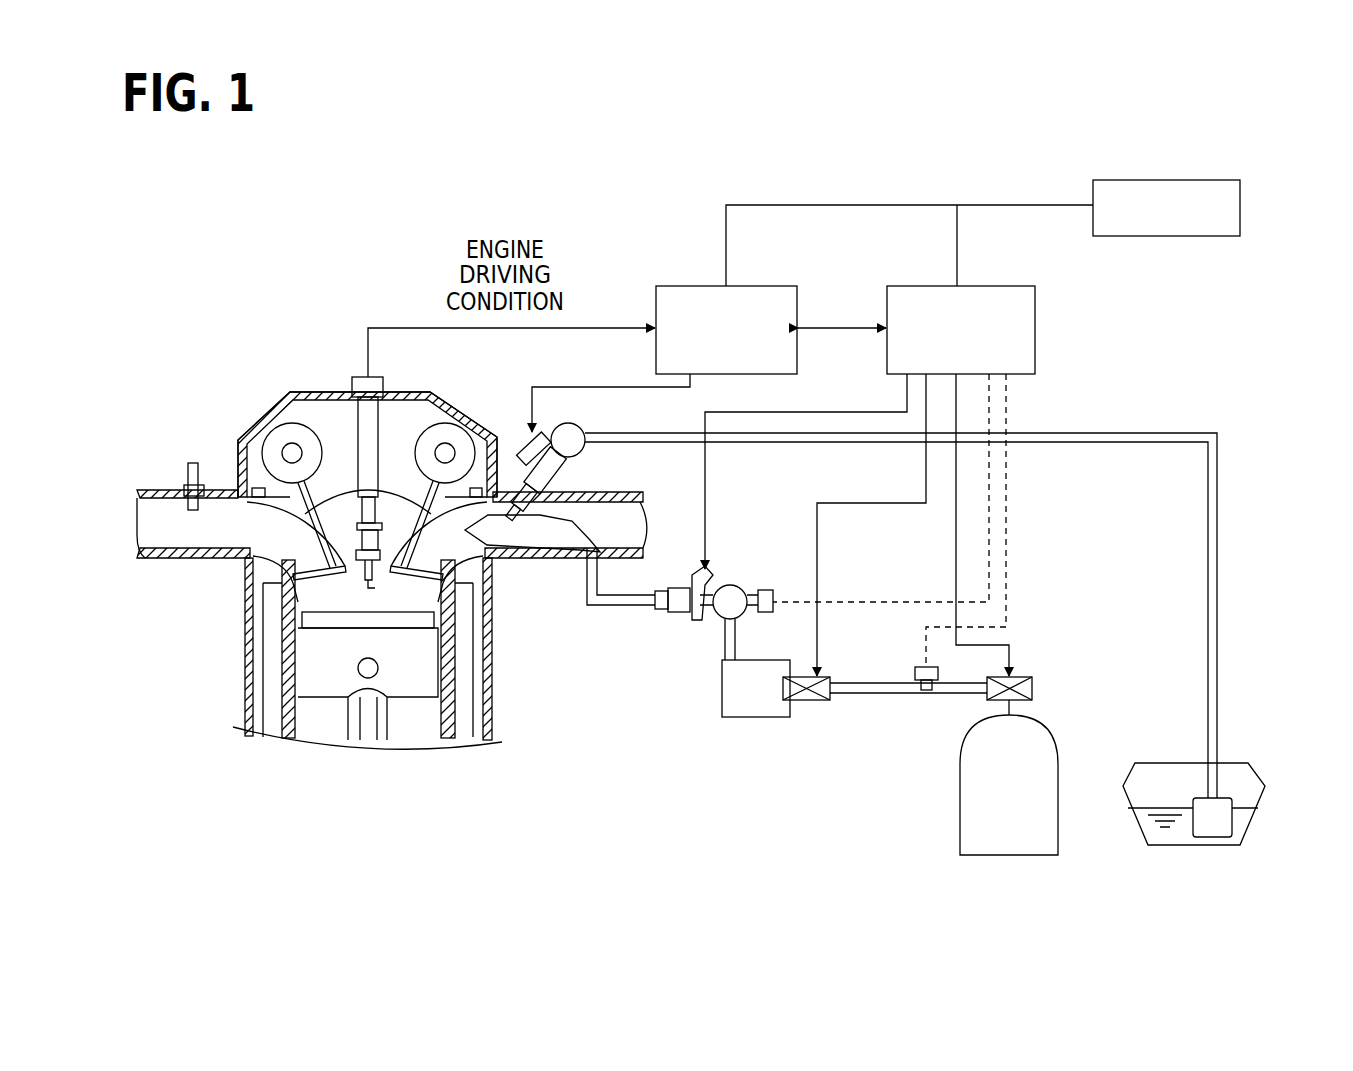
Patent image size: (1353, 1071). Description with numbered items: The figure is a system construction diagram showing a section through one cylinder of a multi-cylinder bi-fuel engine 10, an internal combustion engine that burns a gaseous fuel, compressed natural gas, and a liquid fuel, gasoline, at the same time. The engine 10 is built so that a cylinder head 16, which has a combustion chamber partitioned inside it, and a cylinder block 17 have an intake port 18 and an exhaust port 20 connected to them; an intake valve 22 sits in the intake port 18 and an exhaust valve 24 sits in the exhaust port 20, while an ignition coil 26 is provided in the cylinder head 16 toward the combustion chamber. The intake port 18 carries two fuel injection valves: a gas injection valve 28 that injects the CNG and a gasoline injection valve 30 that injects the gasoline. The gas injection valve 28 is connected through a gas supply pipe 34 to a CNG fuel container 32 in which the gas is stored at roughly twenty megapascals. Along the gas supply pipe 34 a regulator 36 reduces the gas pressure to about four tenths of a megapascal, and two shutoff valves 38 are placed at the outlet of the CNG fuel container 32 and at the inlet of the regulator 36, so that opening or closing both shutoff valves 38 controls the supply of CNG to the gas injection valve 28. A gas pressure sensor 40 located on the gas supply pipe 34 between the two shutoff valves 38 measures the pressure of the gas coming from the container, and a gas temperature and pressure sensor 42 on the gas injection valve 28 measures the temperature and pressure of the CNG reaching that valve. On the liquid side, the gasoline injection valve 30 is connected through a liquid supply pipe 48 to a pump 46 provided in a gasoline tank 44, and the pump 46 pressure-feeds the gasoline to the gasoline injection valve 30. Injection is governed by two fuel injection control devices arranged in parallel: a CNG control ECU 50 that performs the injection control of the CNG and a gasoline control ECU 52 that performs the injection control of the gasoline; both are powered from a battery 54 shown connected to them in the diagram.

The bi-fuel engine 10 is at (326, 389).
The cylinder head 16 is at (276, 408).
The cylinder block 17 is at (495, 690).
The intake port 18 is at (546, 560).
The exhaust port 20 is at (155, 560).
The intake valve 22 is at (455, 603).
The exhaust valve 24 is at (283, 603).
The ignition coil 26 is at (378, 540).
The gas injection valve 28 is at (680, 615).
The gasoline injection valve 30 is at (555, 488).
The CNG fuel container 32 is at (960, 792).
The gas supply pipe 34 is at (884, 695).
The regulator 36 is at (750, 718).
The shutoff valve 38 is at (810, 701).
The gas pressure sensor 40 is at (915, 670).
The gas temperature & pressure sensor 42 is at (764, 590).
The gasoline tank 44 is at (1262, 796).
The pump 46 is at (1220, 828).
The liquid supply pipe 48 is at (1218, 622).
The CNG control ECU 50 is at (1005, 286).
The gasoline control ECU 52 is at (775, 286).
The battery 54 is at (1150, 180).